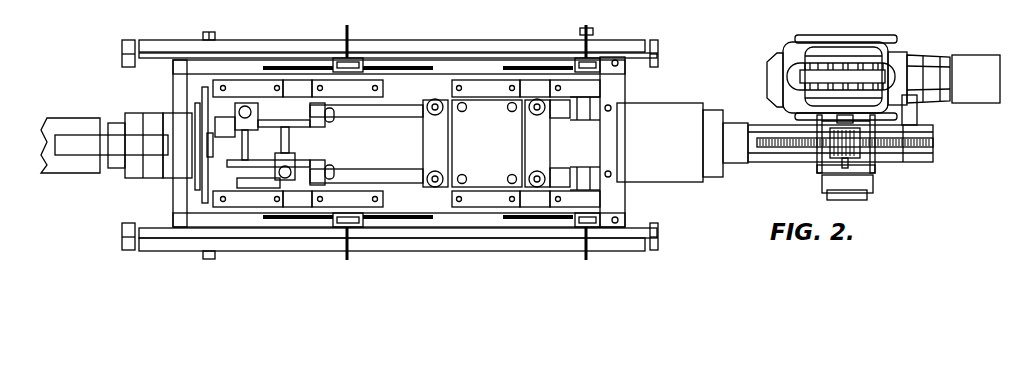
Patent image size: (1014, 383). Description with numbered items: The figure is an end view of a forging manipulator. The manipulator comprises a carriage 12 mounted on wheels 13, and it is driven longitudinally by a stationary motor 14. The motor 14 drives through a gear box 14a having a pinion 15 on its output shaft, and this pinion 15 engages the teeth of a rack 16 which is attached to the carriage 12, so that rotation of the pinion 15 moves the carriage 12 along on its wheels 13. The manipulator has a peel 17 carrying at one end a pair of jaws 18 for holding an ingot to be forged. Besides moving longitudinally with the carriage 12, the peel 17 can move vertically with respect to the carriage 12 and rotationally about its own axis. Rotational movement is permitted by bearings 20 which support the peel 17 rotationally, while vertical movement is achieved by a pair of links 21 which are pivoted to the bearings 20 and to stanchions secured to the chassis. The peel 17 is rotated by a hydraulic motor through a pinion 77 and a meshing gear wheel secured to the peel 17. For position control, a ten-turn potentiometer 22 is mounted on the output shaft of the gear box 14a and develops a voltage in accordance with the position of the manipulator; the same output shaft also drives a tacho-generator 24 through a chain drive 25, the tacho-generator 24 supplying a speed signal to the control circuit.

The carriage 12 is at (175, 218).
The wheels 13 is at (188, 44).
The stationary motor 14 is at (972, 70).
The gear box 14a is at (857, 62).
The pinion 15 is at (830, 152).
The rack 16 is at (780, 150).
The peel 17 is at (376, 153).
The jaws 18 is at (80, 140).
The bearings 20 is at (497, 155).
The links 21 is at (362, 225).
The ten-turn potentiometer 22 is at (860, 196).
The tacho-generator 24 is at (917, 112).
The chain drive 25 is at (900, 135).
The pinion 77 is at (200, 147).